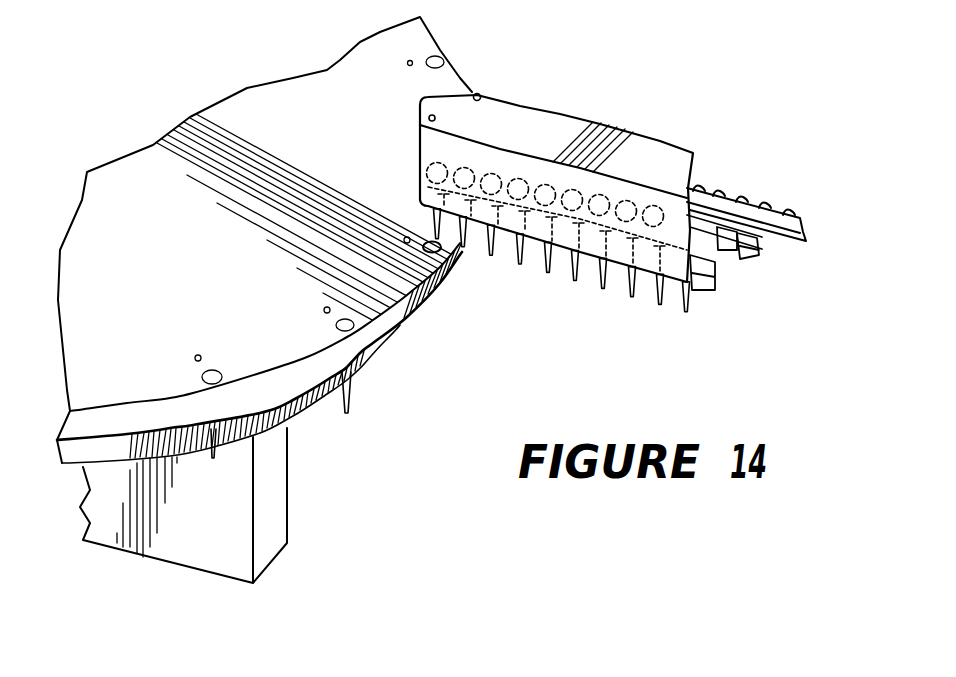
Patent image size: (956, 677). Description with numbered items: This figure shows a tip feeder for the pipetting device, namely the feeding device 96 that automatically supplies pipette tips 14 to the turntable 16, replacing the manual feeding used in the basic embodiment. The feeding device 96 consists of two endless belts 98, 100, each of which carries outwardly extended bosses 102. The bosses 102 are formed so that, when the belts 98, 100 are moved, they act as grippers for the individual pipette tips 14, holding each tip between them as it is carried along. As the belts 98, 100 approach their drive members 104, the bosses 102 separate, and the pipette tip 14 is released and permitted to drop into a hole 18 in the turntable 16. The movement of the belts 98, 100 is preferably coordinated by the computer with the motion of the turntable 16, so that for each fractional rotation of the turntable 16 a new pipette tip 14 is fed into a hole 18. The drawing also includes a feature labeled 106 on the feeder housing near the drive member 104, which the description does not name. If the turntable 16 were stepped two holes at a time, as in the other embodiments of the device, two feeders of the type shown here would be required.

The turntable 16 is at (153, 207).
The pipette tip 14 is at (430, 234).
The hole 18 is at (447, 249).
The feeding device 96 is at (710, 75).
The endless belt 98 is at (783, 217).
The endless belt 100 is at (718, 256).
The boss 102 is at (752, 249).
The drive member 104 is at (427, 118).
The mounting hole 106 is at (478, 93).